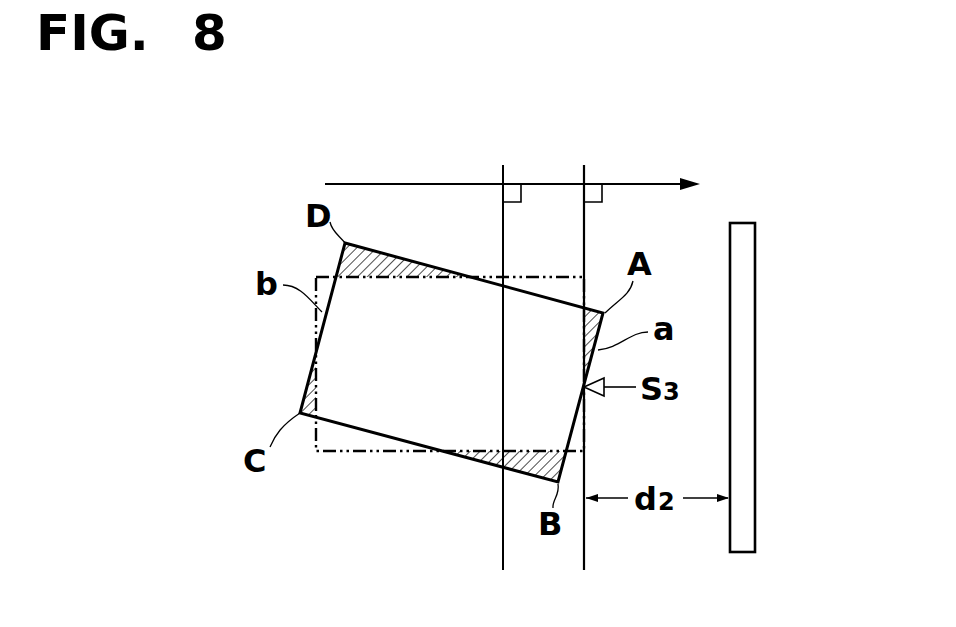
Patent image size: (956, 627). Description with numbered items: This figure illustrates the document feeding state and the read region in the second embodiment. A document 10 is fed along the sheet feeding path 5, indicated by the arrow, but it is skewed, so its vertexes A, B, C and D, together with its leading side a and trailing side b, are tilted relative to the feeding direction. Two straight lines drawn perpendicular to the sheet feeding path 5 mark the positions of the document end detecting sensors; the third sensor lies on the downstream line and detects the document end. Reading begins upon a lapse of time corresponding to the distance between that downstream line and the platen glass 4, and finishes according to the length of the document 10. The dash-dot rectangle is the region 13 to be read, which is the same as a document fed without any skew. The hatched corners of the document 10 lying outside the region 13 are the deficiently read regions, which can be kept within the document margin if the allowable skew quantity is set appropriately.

The platen glass 4 is at (741, 232).
The sheet feeding path 5 is at (642, 184).
The document 10 is at (428, 432).
The region to be read 13 is at (352, 452).